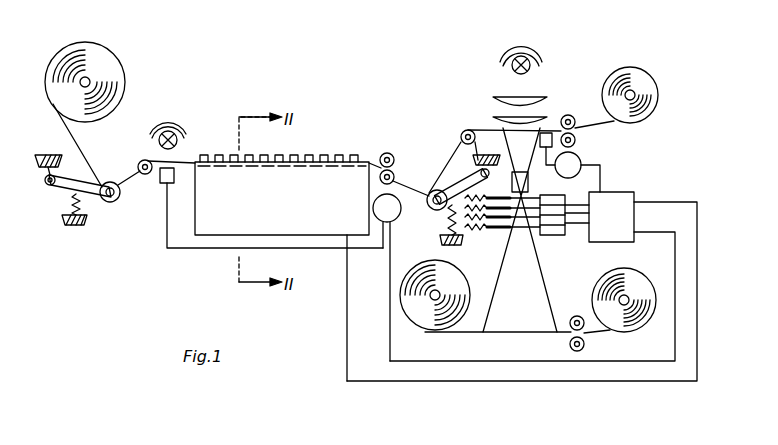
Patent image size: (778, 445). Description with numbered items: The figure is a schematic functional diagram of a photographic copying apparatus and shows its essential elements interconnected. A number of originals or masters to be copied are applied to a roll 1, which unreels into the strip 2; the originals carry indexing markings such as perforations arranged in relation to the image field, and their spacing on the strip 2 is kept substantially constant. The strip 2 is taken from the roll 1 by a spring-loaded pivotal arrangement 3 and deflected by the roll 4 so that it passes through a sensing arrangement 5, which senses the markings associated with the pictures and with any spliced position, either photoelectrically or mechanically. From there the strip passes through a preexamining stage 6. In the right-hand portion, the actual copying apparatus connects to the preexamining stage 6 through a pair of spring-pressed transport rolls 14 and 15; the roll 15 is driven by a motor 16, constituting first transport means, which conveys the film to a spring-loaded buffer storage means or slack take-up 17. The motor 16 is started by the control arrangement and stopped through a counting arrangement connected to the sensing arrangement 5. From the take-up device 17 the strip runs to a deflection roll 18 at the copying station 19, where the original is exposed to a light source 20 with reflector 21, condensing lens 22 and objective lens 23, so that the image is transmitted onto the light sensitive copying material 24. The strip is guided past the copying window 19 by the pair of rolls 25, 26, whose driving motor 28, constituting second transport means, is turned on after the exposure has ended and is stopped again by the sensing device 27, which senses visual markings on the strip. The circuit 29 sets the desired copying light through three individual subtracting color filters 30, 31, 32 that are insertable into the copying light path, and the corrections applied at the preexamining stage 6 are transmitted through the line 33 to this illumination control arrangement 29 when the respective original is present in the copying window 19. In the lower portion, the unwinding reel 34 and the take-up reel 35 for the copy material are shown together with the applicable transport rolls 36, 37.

The roll 1 is at (105, 62).
The strip 2 is at (80, 146).
The spring-loaded pivotal arrangement 3 is at (65, 198).
The roll 4 is at (145, 176).
The sensing arrangement 5 is at (158, 140).
The preexamining stage 6 is at (333, 160).
The transport roll 14 is at (384, 152).
The transport roll 15 is at (397, 186).
The motor 16 is at (392, 225).
The buffer storage means 17 is at (458, 185).
The deflection roll 18 is at (462, 134).
The copying station 19 is at (494, 124).
The light source 20 is at (530, 68).
The reflector 21 is at (502, 58).
The condensing lens 22 is at (494, 105).
The objective lens 23 is at (487, 152).
The copying material 24 is at (500, 333).
The roll 25 is at (578, 140).
The roll 26 is at (571, 114).
The sensing device 27 is at (550, 130).
The driving motor 28 is at (580, 162).
The circuit 29 is at (622, 242).
The subtracting color filter 30 is at (528, 185).
The subtracting color filter 31 is at (505, 230).
The subtracting color filter 32 is at (518, 248).
The line 33 is at (625, 381).
The unwinding reel 34 is at (422, 315).
The take-up reel 35 is at (600, 283).
The transport roll 36 is at (584, 346).
The transport roll 37 is at (575, 315).